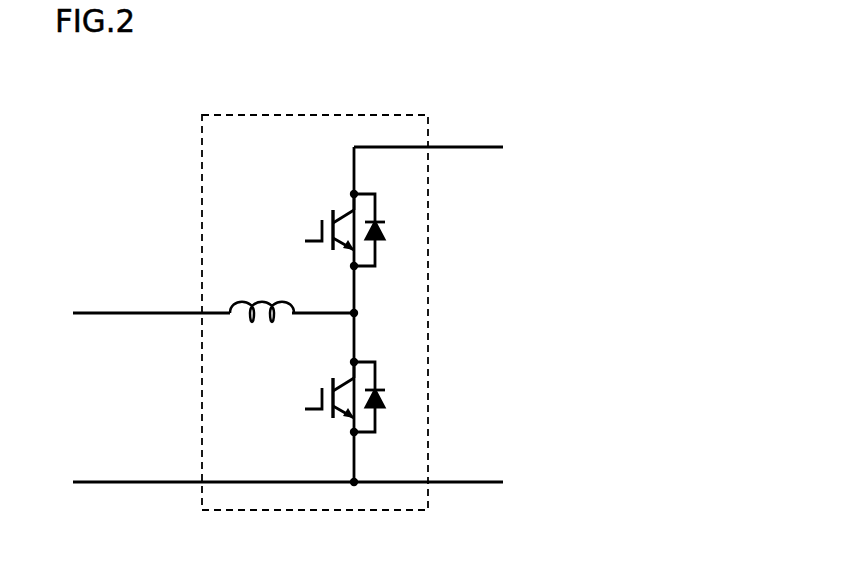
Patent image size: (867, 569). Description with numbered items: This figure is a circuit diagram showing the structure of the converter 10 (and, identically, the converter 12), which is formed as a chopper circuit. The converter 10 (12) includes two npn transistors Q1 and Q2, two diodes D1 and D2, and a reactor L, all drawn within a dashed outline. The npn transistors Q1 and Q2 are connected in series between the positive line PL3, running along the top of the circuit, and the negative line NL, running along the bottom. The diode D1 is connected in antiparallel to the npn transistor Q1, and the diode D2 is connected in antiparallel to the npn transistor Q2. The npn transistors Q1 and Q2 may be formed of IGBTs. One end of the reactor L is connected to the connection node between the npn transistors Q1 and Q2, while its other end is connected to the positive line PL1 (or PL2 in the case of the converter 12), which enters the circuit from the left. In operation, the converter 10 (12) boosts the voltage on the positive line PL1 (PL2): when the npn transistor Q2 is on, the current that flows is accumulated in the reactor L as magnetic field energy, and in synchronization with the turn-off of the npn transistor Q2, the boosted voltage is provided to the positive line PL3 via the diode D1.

The converter 10 is at (315, 289).
The converter 12 is at (318, 115).
The positive line PL1 is at (213, 288).
The positive line PL2 is at (126, 312).
The positive line PL3 is at (472, 146).
The reactor L is at (251, 302).
The npn transistor Q1 is at (321, 231).
The npn transistor Q2 is at (321, 401).
The diode D1 is at (382, 232).
The diode D2 is at (382, 402).
The negative line NL is at (133, 483).